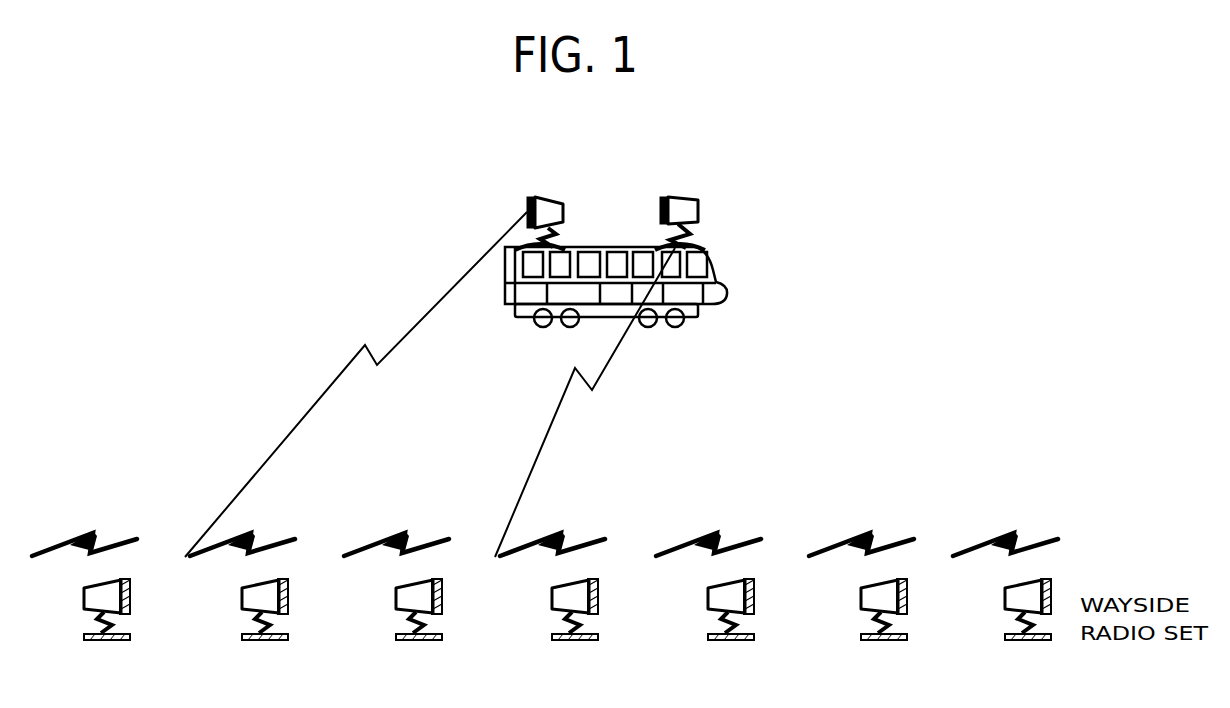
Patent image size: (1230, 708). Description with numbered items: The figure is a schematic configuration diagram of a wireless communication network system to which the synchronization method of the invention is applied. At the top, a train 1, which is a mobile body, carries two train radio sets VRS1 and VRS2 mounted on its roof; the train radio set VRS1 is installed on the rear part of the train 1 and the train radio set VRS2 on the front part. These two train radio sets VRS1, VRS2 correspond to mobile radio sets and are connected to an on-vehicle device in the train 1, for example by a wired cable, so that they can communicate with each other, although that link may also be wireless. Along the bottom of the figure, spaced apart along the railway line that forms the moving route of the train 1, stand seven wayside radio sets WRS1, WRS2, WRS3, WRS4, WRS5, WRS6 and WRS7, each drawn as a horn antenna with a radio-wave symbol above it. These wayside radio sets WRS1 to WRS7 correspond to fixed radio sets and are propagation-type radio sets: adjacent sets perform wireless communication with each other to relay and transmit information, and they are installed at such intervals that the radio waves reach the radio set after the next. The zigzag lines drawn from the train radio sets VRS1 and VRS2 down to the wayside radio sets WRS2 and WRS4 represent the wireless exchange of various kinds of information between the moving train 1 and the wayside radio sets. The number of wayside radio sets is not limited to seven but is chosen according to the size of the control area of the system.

The train 1 is at (727, 292).
The train radio set VRS1 is at (375, 347).
The train radio set VRS2 is at (684, 347).
The wayside radio set WRS1 is at (84, 600).
The wayside radio set WRS2 is at (242, 600).
The wayside radio set WRS3 is at (396, 600).
The wayside radio set WRS4 is at (552, 600).
The wayside radio set WRS5 is at (708, 600).
The wayside radio set WRS6 is at (861, 600).
The wayside radio set WRS7 is at (1005, 600).